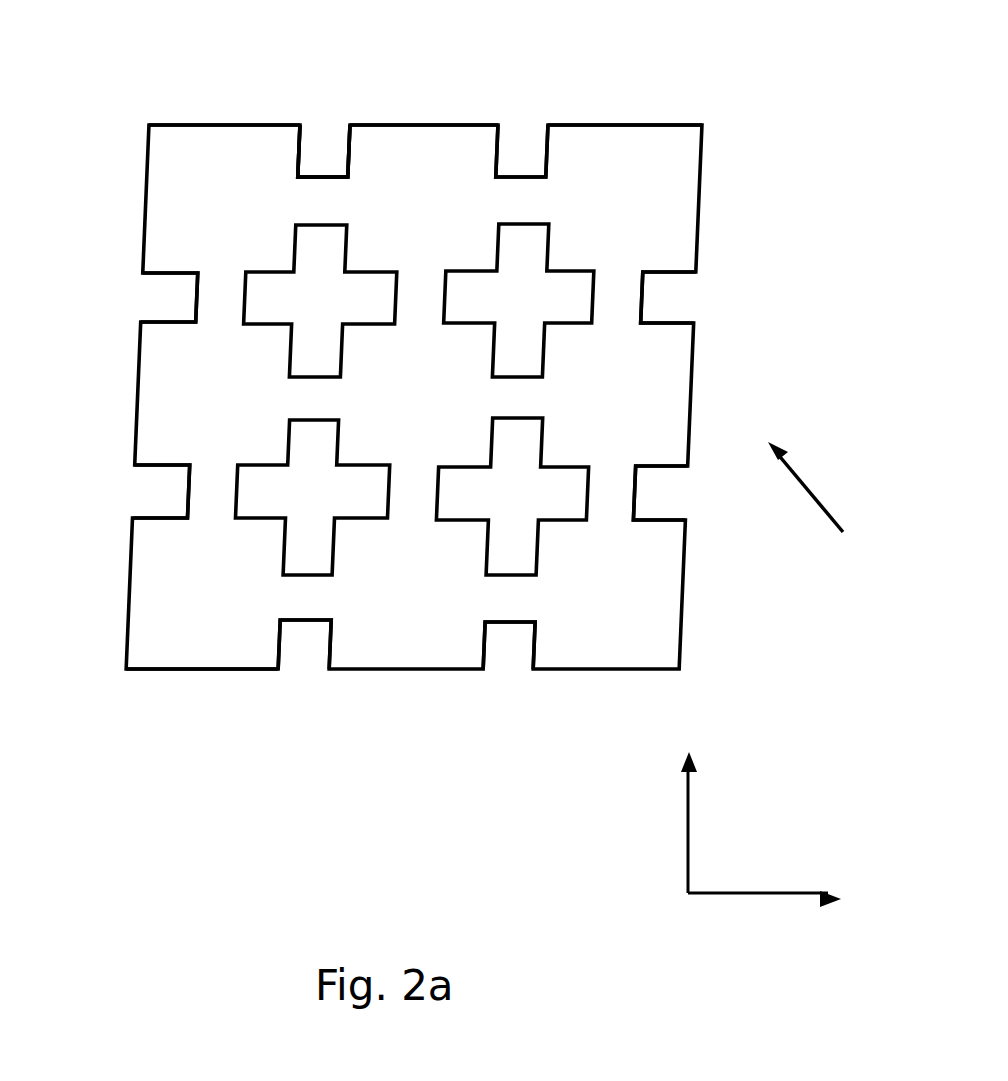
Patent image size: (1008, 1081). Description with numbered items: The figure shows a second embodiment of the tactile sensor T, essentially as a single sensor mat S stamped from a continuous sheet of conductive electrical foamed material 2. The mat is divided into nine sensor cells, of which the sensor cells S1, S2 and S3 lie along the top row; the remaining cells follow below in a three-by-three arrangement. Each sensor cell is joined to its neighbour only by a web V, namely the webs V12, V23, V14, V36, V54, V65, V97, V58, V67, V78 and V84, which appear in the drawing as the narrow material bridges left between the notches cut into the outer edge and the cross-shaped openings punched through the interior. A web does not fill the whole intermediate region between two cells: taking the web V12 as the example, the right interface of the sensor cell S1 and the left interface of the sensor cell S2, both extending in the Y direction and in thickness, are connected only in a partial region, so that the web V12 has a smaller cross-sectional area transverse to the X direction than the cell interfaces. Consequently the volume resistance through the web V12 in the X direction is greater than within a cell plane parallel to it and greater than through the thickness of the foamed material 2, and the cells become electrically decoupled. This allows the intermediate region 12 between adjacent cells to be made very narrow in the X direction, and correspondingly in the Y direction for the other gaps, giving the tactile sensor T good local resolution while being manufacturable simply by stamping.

The conductive electrical foamed material 2 is at (132, 580).
The intermediate region 12 is at (318, 136).
The sensor cell S1 is at (222, 124).
The sensor cell S2 is at (461, 123).
The sensor cell S3 is at (651, 124).
The web V12 is at (318, 200).
The web V23 is at (523, 197).
The web V14 is at (213, 288).
The web V36 is at (627, 297).
The web V54 is at (312, 383).
The web V65 is at (432, 296).
The web V97 is at (210, 490).
The web V58 is at (312, 497).
The web V67 is at (627, 498).
The web V78 is at (293, 603).
The web V84 is at (502, 610).
The sensor mat S is at (147, 670).
The tactile sensor T is at (822, 503).
The X direction X is at (783, 888).
The Y direction Y is at (694, 801).